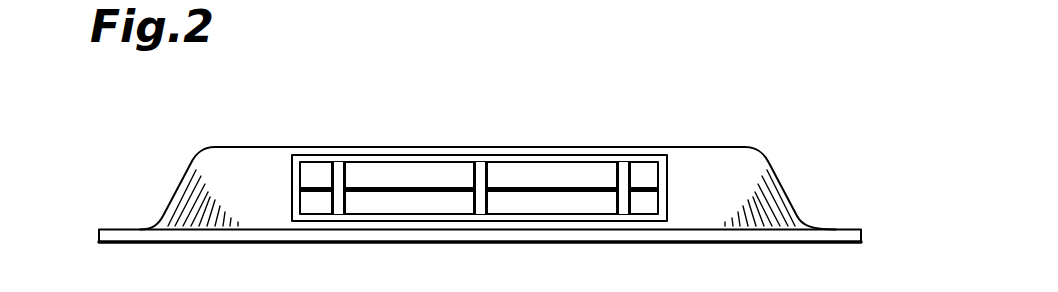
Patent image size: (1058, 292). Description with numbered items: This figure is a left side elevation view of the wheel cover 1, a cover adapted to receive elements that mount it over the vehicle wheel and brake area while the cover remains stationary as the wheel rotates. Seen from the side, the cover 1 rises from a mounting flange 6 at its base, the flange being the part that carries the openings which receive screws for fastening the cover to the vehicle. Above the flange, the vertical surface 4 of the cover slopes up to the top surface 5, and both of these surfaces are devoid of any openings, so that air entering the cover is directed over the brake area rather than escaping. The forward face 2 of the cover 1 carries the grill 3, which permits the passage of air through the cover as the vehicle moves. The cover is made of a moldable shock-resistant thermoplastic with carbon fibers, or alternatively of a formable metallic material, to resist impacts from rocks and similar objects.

The wheel cover 1 is at (480, 140).
The forward face 2 is at (480, 134).
The grill 3 is at (479, 135).
The vertical surface 4 is at (480, 163).
The top surface 5 is at (480, 93).
The mounting flange 6 is at (480, 180).